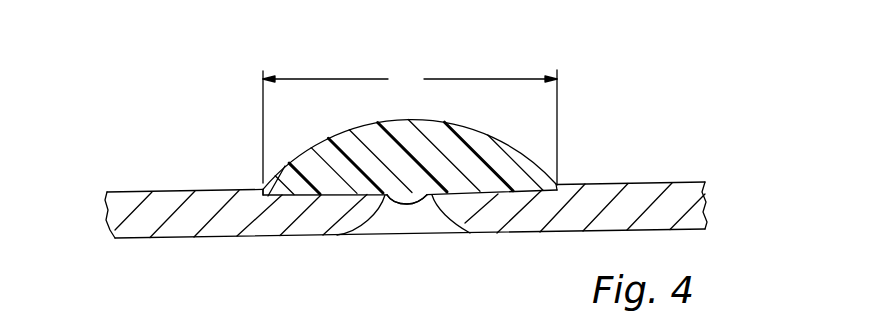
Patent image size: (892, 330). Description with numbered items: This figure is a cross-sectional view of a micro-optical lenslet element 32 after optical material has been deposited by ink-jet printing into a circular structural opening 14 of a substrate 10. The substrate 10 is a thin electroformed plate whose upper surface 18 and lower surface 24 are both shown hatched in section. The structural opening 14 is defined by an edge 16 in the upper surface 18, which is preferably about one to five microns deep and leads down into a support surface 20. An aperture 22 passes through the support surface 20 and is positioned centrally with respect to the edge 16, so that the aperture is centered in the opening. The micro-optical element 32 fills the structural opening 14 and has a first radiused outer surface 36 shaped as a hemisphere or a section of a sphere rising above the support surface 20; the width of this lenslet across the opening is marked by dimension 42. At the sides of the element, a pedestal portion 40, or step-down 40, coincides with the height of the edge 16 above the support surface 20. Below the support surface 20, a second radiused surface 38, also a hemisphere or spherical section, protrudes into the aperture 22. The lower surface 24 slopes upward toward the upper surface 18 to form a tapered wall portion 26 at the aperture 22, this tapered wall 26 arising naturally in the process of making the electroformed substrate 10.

The substrate 10 is at (107, 203).
The structural opening 14 is at (258, 181).
The edge 16 is at (554, 181).
The upper surface 18 is at (133, 191).
The support surface 20 is at (333, 194).
The aperture 22 is at (432, 195).
The lower surface 24 is at (134, 238).
The tapered wall portion 26 is at (448, 221).
The micro-optical lenslet element 32 is at (515, 110).
The first radiused outer surface 36 is at (493, 138).
The second radiused surface 38 is at (407, 204).
The pedestal portion 40 is at (293, 195).
The bump width dimension 42 is at (410, 127).